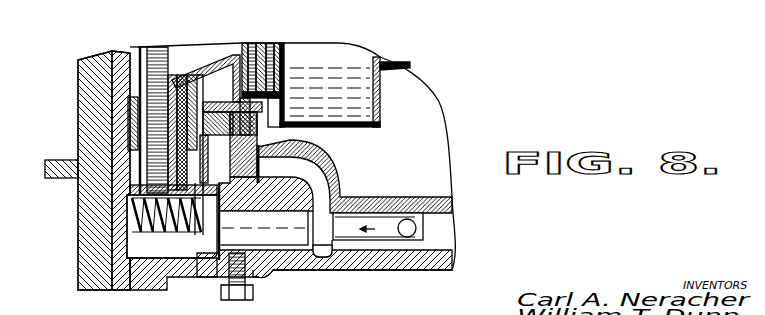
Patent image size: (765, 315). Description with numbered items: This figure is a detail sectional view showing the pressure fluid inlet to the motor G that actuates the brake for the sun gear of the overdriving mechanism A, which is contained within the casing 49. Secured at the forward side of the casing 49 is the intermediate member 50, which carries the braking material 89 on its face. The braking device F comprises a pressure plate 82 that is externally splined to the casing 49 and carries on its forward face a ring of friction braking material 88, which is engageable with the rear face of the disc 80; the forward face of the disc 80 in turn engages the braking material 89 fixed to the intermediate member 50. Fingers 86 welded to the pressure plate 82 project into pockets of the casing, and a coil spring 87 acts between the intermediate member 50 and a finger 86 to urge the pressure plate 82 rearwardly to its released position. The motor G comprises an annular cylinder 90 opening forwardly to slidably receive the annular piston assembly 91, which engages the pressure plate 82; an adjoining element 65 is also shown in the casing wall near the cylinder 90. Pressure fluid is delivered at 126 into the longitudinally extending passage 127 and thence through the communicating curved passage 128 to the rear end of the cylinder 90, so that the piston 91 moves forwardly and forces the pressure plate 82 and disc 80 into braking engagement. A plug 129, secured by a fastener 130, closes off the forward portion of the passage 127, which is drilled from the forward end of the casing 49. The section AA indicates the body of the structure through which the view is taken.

The housing body AA is at (88, 228).
The braking material 89 is at (128, 117).
The braking device F is at (172, 97).
The ring of friction braking material 88 is at (187, 92).
The disc 80 is at (233, 78).
The annular cylinder 90 is at (256, 84).
The annular piston assembly 91 is at (272, 108).
The pressure plate 82 is at (204, 97).
The cup 65 is at (352, 67).
The pressure fluid motor G is at (298, 108).
The overdriving mechanism A is at (432, 121).
The curved passage 128 is at (312, 150).
The plug 129 is at (266, 275).
The casing 49 is at (380, 258).
The longitudinally extending passage 127 is at (373, 214).
The delivery point 126 is at (414, 220).
The fastener 130 is at (218, 279).
The intermediate member 50 is at (128, 290).
The fingers 86 is at (207, 236).
The coil spring 87 is at (143, 234).